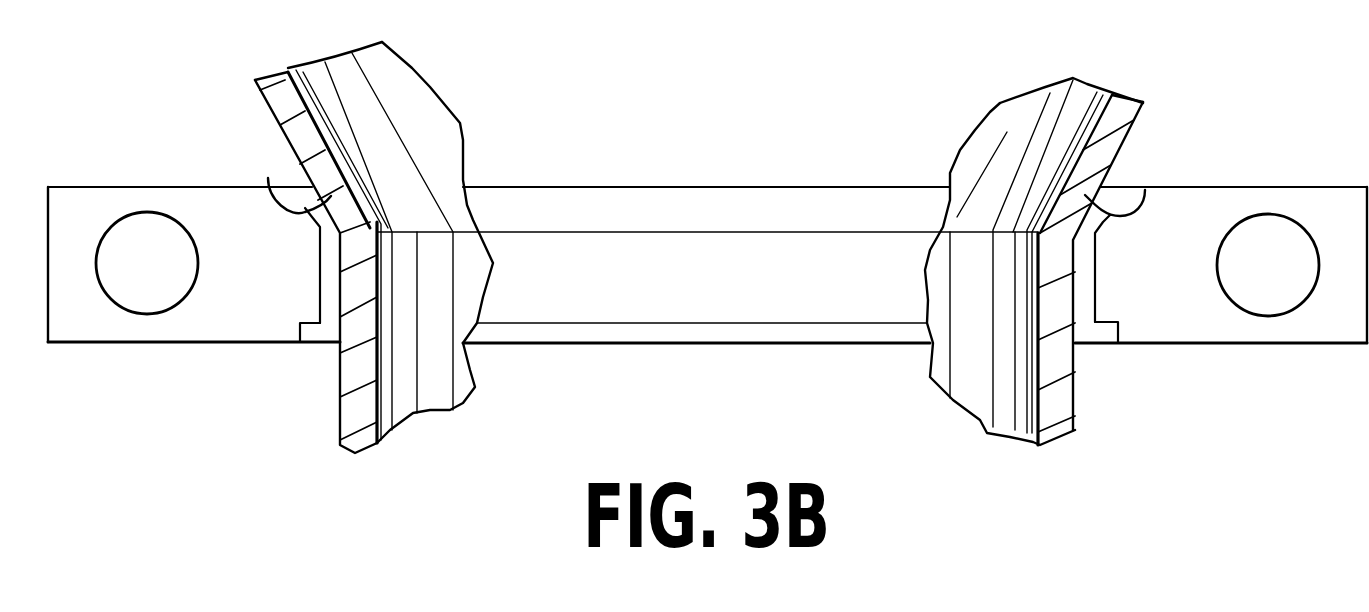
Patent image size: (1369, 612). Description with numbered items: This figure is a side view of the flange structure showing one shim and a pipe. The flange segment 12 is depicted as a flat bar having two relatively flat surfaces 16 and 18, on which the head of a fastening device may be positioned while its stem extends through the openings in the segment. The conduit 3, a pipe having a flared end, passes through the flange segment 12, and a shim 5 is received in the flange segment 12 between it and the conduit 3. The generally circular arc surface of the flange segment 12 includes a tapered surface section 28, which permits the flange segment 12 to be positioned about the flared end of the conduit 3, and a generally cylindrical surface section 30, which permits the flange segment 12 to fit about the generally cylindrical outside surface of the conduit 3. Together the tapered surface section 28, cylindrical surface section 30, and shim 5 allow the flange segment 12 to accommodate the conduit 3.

The conduit 3 is at (267, 78).
The shim 5 is at (328, 277).
The flange segment 12 is at (170, 202).
The flat surface 16 is at (1277, 188).
The flat surface 18 is at (1247, 345).
The tapered surface section 28 is at (270, 185).
The cylindrical surface section 30 is at (318, 300).